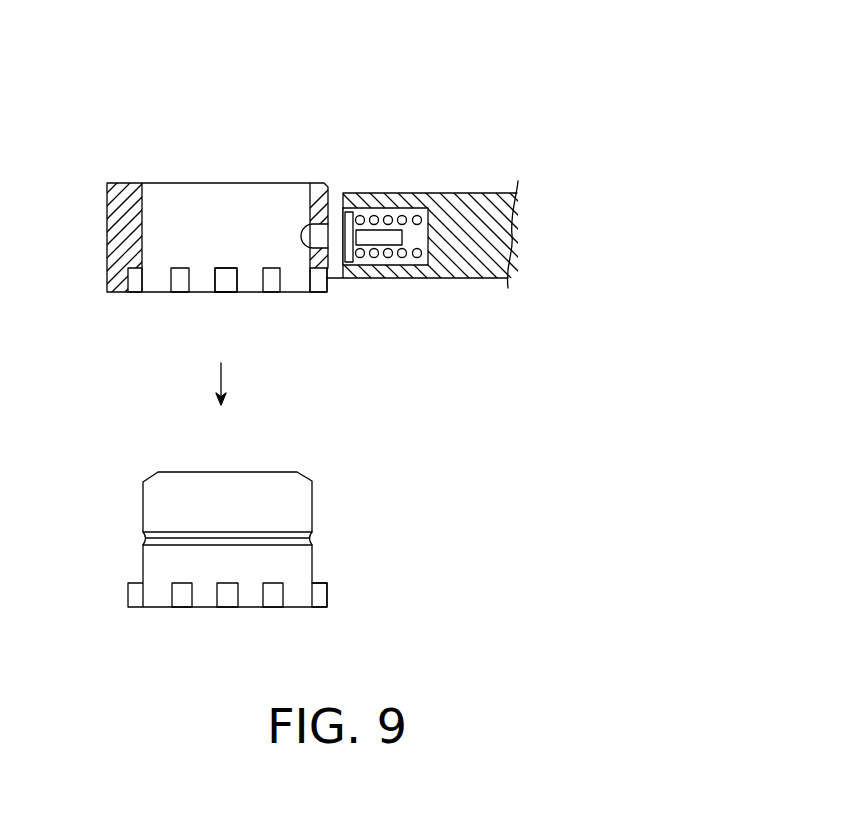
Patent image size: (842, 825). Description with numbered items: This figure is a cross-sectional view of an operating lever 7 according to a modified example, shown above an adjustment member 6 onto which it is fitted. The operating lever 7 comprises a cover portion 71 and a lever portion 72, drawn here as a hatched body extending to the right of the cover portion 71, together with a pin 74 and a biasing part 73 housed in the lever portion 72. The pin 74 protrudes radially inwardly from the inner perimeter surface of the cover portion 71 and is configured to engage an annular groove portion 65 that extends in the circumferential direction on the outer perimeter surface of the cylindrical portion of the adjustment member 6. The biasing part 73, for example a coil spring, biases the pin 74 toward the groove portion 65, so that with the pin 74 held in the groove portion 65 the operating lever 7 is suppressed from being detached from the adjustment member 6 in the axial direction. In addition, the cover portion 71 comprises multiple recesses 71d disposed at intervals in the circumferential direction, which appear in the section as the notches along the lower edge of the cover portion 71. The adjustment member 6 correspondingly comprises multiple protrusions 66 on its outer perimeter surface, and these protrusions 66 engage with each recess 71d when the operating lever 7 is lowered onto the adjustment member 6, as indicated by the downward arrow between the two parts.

The operating lever 7 is at (111, 116).
The cover portion 71 is at (314, 183).
The recesses 71d is at (237, 280).
The lever portion 72 is at (452, 195).
The biasing part 73 is at (401, 216).
The pin 74 is at (325, 232).
The adjustment member 6 is at (142, 472).
The groove portion 65 is at (312, 536).
The protrusions 66 is at (325, 597).